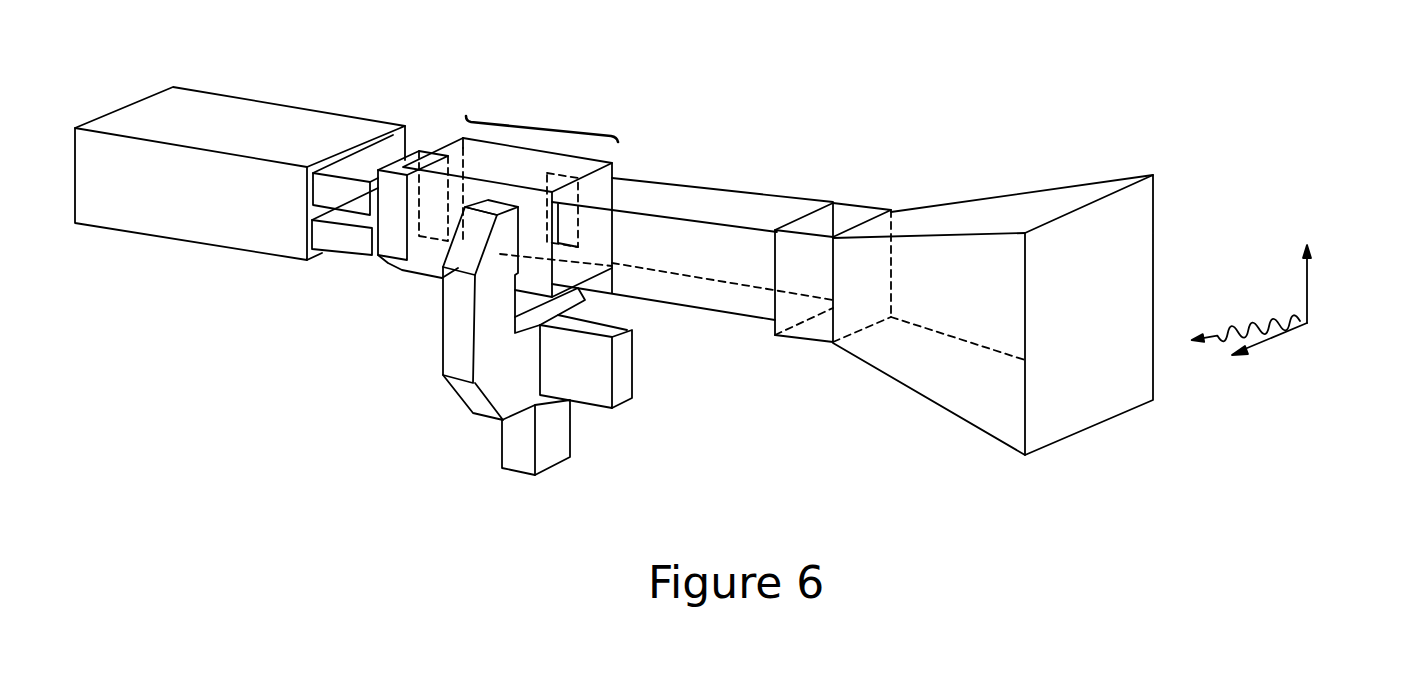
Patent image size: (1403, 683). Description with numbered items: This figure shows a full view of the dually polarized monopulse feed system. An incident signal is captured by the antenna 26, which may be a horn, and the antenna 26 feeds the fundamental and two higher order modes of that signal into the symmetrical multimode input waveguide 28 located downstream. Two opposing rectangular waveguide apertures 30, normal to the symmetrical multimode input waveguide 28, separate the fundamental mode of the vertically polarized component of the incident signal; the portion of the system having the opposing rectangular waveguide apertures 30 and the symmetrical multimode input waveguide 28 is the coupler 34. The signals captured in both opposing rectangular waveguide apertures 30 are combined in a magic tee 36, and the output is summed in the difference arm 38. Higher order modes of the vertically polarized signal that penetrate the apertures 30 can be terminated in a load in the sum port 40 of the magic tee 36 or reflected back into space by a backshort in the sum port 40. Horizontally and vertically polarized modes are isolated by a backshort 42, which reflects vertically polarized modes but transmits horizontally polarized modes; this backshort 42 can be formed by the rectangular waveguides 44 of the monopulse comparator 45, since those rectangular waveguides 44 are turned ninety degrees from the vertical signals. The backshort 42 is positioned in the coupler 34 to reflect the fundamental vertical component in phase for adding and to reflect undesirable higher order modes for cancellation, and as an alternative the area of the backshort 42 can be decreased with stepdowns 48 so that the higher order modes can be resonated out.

The antenna 26 is at (920, 365).
The symmetrical multimode input waveguide 28 is at (675, 202).
The opposing rectangular waveguide apertures 30 is at (567, 217).
The coupler 34 is at (510, 198).
The magic tee 36 is at (505, 390).
The difference arm 38 is at (628, 372).
The sum port 40 is at (522, 478).
The backshort 42 is at (382, 205).
The rectangular waveguides 44 is at (398, 152).
The monopulse comparator 45 is at (198, 205).
The stepdowns 48 is at (388, 265).